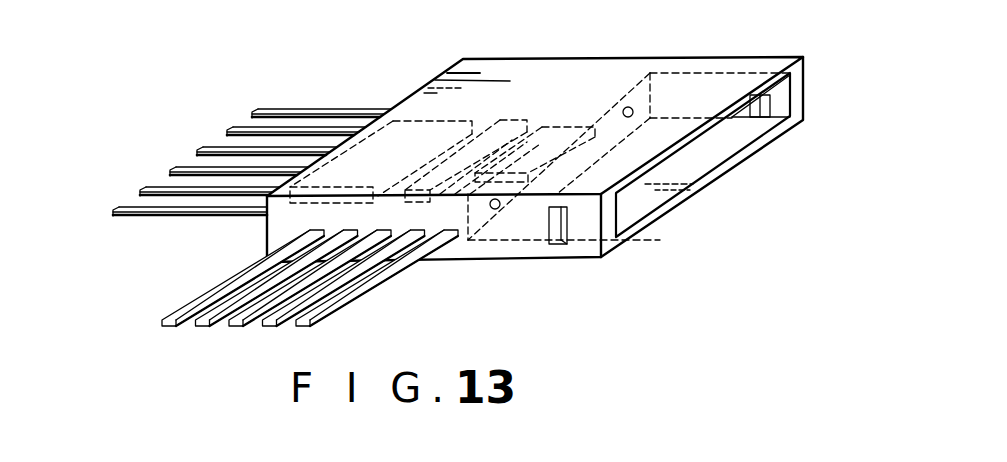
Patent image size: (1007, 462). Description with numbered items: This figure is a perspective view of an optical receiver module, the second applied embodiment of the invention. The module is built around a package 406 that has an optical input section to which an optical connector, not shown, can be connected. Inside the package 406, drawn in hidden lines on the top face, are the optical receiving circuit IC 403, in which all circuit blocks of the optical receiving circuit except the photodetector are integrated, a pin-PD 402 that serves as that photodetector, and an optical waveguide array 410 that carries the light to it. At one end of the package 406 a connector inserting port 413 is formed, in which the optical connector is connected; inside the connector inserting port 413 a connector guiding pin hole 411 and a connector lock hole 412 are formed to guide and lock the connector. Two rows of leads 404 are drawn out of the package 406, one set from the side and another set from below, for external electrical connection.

The pin-PD 402 is at (510, 113).
The optical receiving circuit IC 403 is at (394, 120).
The leads 404 is at (291, 108).
The package 406 is at (481, 73).
The optical waveguide array 410 is at (557, 123).
The connector guiding pin hole 411 is at (496, 210).
The connector lock hole 412 is at (556, 232).
The connector inserting port 413 is at (690, 180).